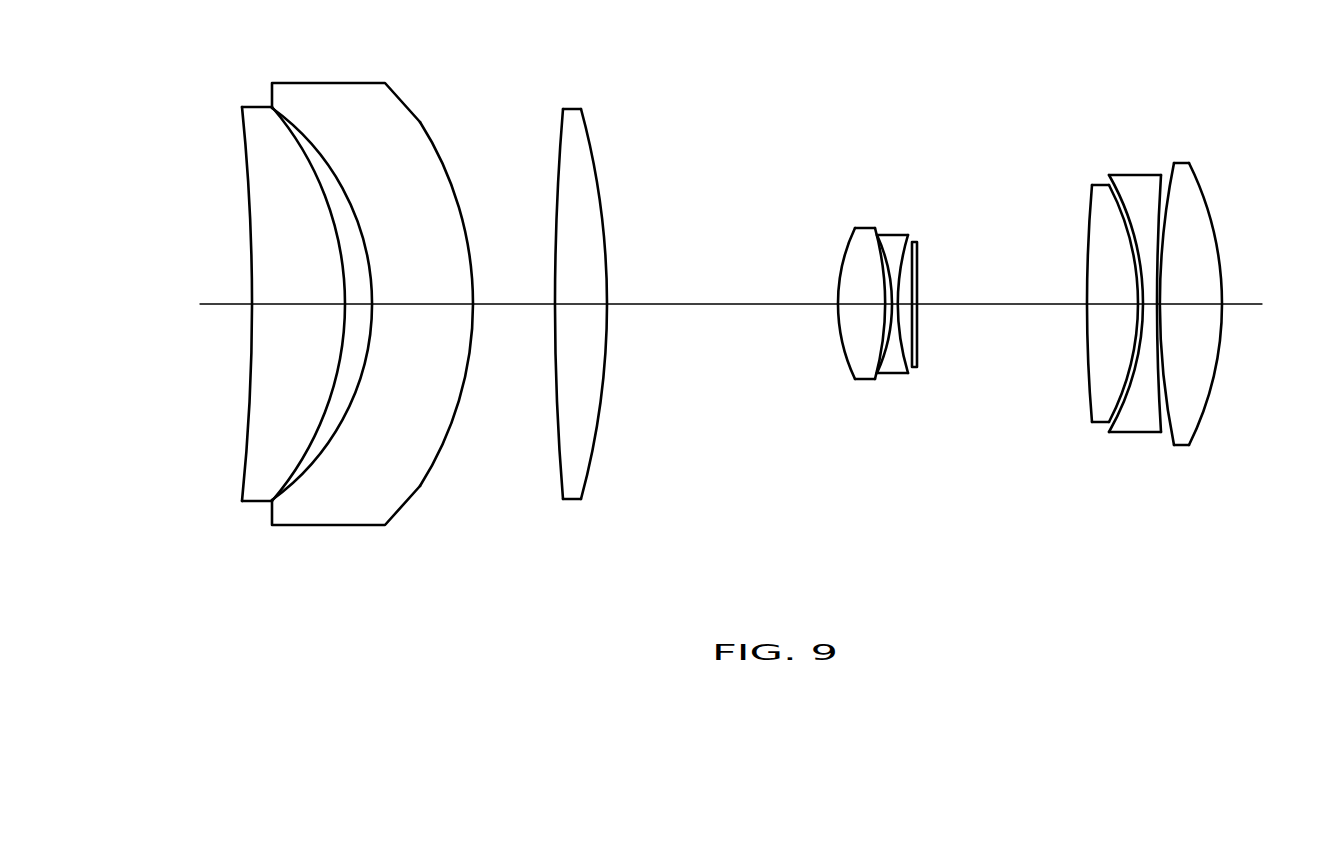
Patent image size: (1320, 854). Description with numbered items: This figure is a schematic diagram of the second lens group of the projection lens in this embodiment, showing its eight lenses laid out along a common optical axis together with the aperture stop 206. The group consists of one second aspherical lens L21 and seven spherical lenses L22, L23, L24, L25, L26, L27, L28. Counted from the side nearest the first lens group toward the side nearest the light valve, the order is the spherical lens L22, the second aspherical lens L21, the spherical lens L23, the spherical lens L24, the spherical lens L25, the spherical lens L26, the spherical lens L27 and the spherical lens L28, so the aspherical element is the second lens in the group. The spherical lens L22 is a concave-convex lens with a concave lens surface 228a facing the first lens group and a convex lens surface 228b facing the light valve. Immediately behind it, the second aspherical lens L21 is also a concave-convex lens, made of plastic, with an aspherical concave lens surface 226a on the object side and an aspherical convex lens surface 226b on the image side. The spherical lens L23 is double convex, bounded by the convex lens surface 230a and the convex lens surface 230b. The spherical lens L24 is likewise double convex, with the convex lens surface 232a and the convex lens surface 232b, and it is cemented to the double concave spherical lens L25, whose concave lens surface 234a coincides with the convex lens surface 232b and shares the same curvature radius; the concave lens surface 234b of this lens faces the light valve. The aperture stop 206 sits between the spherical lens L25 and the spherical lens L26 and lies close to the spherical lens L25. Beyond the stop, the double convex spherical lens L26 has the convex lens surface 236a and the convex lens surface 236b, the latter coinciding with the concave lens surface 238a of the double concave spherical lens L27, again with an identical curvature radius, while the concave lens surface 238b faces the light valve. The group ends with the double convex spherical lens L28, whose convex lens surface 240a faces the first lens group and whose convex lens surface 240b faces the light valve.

The second aspherical lens L21 is at (382, 307).
The spherical lens L22 is at (248, 294).
The spherical lens L23 is at (597, 307).
The spherical lens L24 is at (816, 302).
The spherical lens L25 is at (896, 324).
The spherical lens L26 is at (1069, 297).
The spherical lens L27 is at (1144, 290).
The spherical lens L28 is at (1234, 321).
The aperture stop 206 is at (918, 343).
The concave lens surface 226a is at (308, 135).
The convex lens surface 226b is at (420, 122).
The concave lens surface 228a is at (247, 162).
The convex lens surface 228b is at (302, 152).
The convex lens surface 230a is at (560, 143).
The convex lens surface 230b is at (590, 137).
The convex lens surface 232a is at (847, 247).
The convex lens surface 232b is at (872, 242).
The concave lens surface 234a is at (888, 375).
The concave lens surface 234b is at (898, 370).
The convex lens surface 236a is at (1087, 203).
The convex lens surface 236b is at (1118, 207).
The concave lens surface 238a is at (1135, 213).
The concave lens surface 238b is at (1157, 212).
The convex lens surface 240a is at (1165, 217).
The convex lens surface 240b is at (1213, 223).